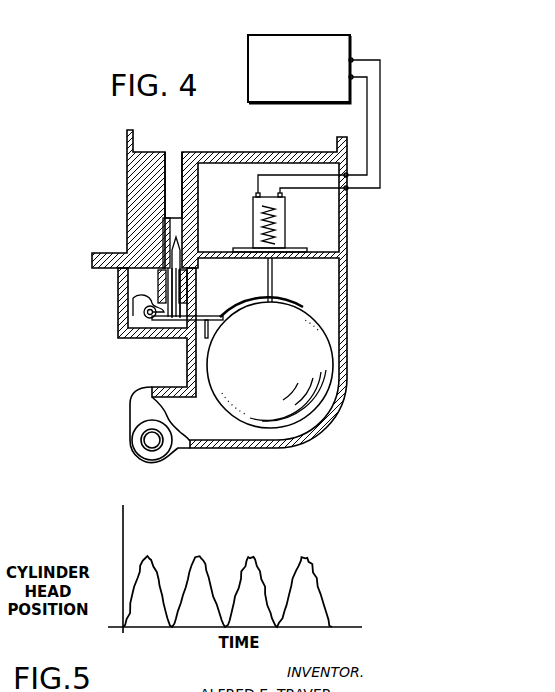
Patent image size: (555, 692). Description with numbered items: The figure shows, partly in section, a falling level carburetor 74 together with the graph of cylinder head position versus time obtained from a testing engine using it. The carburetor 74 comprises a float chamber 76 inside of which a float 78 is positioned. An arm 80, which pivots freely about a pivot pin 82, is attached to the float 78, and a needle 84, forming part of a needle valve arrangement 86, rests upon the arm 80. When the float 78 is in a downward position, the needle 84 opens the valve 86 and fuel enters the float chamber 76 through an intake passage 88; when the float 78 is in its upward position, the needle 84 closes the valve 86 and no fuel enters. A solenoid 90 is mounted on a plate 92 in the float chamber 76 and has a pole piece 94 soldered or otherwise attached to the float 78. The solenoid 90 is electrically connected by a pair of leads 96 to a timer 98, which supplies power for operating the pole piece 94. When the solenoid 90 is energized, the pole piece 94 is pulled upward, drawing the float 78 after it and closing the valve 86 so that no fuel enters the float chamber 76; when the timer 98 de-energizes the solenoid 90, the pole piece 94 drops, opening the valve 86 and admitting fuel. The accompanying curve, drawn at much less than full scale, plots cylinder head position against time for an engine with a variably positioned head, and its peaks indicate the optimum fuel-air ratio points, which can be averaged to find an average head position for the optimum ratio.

The carburetor 74 is at (352, 390).
The float chamber 76 is at (312, 289).
The float 78 is at (219, 395).
The arm 80 is at (217, 318).
The pivot pin 82 is at (148, 306).
The needle 84 is at (180, 257).
The needle valve arrangement 86 is at (187, 231).
The intake passage 88 is at (181, 160).
The solenoid 90 is at (285, 211).
The plate 92 is at (320, 251).
The pole piece 94 is at (267, 269).
The leads 96 is at (380, 131).
The timer 98 is at (292, 35).